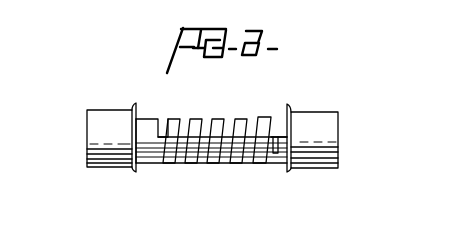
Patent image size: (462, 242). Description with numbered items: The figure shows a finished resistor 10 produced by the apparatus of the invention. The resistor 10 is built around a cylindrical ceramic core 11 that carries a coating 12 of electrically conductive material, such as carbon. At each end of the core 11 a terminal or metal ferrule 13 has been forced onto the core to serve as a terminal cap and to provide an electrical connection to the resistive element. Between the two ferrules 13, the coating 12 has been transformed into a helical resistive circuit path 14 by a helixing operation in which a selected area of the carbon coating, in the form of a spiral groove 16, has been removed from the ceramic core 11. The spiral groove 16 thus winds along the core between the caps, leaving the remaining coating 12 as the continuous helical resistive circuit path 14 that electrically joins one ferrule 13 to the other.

The resistor 10 is at (177, 107).
The cylindrical ceramic core 11 is at (212, 118).
The coating 12 is at (276, 115).
The terminal or metal ferrule 13 is at (92, 131).
The helical resistive circuit path 14 is at (233, 160).
The spiral groove 16 is at (233, 118).